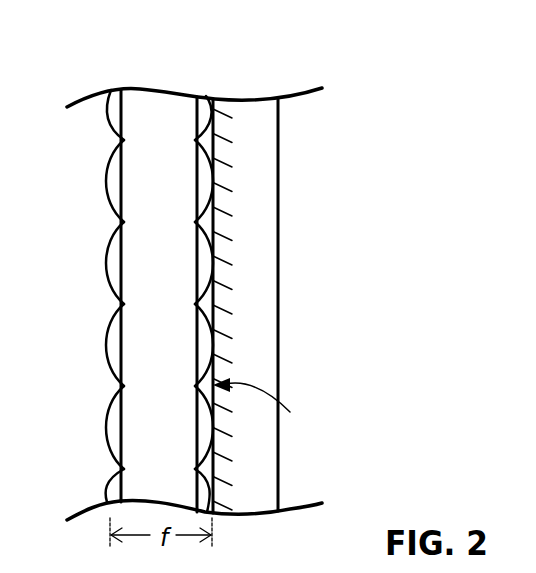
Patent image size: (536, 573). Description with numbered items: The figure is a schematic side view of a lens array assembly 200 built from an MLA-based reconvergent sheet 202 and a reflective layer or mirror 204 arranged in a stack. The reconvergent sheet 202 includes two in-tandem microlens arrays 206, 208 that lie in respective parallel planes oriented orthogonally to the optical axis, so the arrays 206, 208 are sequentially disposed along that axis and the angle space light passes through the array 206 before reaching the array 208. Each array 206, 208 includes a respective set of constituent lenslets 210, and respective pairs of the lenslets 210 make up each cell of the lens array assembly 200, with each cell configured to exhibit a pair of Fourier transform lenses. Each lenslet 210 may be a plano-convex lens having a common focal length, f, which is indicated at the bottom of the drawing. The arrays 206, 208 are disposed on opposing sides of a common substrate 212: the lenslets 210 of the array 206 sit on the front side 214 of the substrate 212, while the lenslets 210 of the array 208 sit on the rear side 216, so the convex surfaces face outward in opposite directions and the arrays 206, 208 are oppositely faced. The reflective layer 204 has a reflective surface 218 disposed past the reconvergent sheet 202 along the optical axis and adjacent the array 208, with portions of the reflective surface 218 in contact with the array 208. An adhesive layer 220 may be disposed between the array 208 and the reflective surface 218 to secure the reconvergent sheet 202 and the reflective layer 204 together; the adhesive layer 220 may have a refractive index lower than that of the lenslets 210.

The lens array assembly 200 is at (326, 37).
The reconvergent sheet 202 is at (158, 277).
The reflective layer 204 is at (279, 175).
The microlens array 206 is at (115, 68).
The microlens array 208 is at (205, 68).
The lenslets 210 is at (110, 246).
The substrate 212 is at (178, 290).
The front side 214 is at (123, 130).
The rear side 216 is at (197, 343).
The reflective surface 218 is at (215, 238).
The adhesive layer 220 is at (265, 408).